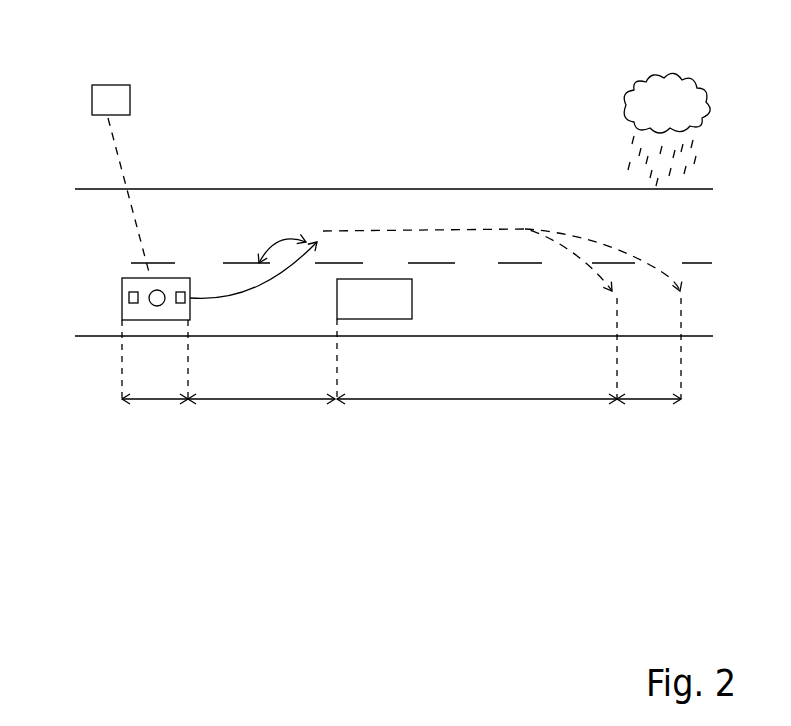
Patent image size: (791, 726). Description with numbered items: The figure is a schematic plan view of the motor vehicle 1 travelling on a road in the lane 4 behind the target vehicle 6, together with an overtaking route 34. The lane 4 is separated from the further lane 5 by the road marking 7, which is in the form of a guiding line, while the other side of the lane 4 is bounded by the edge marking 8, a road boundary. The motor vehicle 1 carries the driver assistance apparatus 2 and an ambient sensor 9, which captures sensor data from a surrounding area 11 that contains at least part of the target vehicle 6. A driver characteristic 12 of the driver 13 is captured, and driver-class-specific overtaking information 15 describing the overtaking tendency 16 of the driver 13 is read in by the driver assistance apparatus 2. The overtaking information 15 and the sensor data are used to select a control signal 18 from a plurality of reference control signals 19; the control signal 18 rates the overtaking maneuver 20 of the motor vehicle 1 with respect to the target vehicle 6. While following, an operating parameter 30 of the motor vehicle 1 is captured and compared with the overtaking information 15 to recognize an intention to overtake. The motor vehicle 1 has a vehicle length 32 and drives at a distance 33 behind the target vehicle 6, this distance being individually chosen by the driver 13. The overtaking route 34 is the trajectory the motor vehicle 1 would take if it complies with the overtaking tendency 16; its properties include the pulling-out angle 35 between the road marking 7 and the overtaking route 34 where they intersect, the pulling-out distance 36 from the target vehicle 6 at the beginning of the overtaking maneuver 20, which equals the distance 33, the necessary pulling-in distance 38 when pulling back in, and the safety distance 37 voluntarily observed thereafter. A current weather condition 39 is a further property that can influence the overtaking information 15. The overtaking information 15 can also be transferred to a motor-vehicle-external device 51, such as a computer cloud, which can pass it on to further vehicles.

The motor vehicle 1 is at (156, 289).
The driver assistance apparatus 2 is at (124, 296).
The lane 4 is at (703, 299).
The further lane 5 is at (687, 226).
The target vehicle 6 is at (380, 294).
The road marking 7 is at (150, 288).
The edge marking 8 is at (698, 336).
The ambient sensor 9 is at (183, 292).
The surrounding area 11 is at (270, 323).
The driver characteristic 12 is at (146, 291).
The driver 13 is at (152, 310).
The overtaking information 15 is at (128, 291).
The overtaking tendency 16 is at (159, 309).
The control signal 18 is at (133, 312).
The reference control signals 19 is at (137, 314).
The overtaking maneuver 20 is at (208, 256).
The operating parameter 30 is at (115, 313).
The vehicle length 32 is at (155, 400).
The distance 33 is at (262, 400).
The overtaking route 34 is at (457, 228).
The pulling-out angle 35 is at (283, 242).
The pulling-out distance 36 is at (238, 405).
The safety distance 37 is at (645, 400).
The pulling-in distance 38 is at (488, 400).
The weather condition 39 is at (643, 77).
The motor-vehicle-external device 51 is at (112, 80).